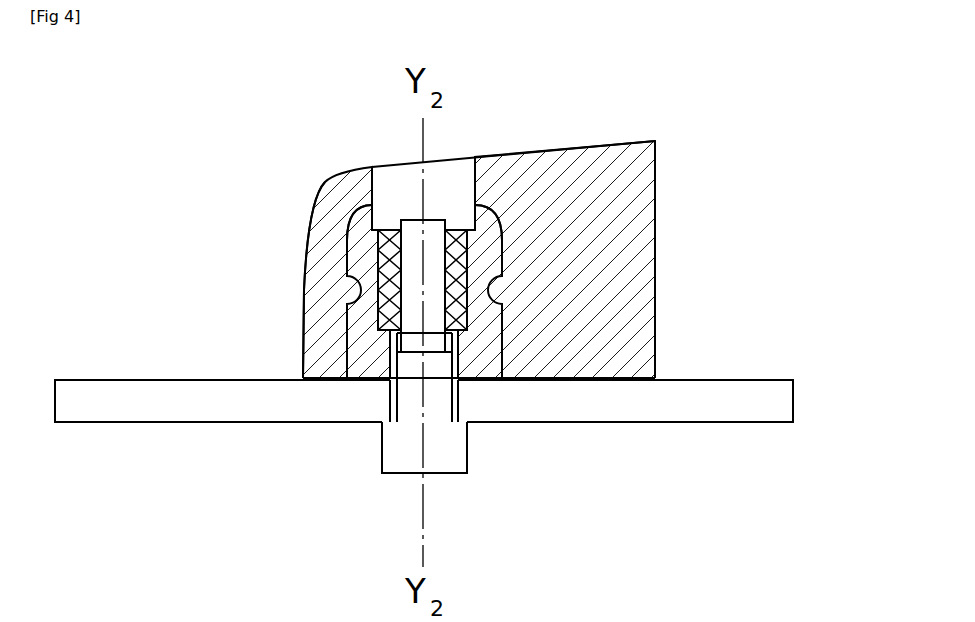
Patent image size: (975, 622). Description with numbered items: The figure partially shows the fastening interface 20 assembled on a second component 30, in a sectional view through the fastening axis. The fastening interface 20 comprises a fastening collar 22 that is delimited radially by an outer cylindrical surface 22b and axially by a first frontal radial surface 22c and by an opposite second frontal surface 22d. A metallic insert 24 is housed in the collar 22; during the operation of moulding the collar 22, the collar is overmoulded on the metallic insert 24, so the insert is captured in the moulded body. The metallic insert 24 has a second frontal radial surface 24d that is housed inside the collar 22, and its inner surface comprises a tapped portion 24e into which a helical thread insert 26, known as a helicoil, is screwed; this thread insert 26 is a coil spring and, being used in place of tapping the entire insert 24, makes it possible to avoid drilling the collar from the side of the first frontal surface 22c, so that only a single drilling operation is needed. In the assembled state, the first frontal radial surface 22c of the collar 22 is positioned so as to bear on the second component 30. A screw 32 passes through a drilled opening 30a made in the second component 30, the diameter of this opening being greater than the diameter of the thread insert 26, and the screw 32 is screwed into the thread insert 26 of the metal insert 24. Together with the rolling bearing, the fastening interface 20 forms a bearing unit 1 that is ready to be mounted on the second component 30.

The bearing unit 1 is at (731, 118).
The fastening interface 20 is at (320, 172).
The fastening collar 22 is at (643, 231).
The outer cylindrical surface 22b is at (305, 255).
The first frontal radial surface 22c is at (617, 380).
The second frontal surface 22d is at (507, 154).
The metallic insert 24 is at (372, 332).
The second frontal radial surface 24d is at (492, 213).
The tapped portion 24e is at (455, 303).
The helical thread insert 26 is at (382, 250).
The second component 30 is at (780, 400).
The drilled opening 30a is at (446, 404).
The screw 32 is at (398, 445).